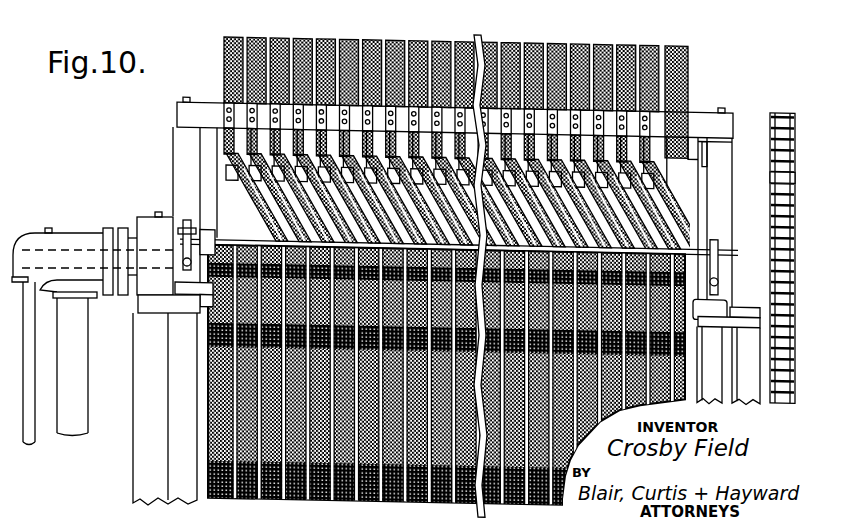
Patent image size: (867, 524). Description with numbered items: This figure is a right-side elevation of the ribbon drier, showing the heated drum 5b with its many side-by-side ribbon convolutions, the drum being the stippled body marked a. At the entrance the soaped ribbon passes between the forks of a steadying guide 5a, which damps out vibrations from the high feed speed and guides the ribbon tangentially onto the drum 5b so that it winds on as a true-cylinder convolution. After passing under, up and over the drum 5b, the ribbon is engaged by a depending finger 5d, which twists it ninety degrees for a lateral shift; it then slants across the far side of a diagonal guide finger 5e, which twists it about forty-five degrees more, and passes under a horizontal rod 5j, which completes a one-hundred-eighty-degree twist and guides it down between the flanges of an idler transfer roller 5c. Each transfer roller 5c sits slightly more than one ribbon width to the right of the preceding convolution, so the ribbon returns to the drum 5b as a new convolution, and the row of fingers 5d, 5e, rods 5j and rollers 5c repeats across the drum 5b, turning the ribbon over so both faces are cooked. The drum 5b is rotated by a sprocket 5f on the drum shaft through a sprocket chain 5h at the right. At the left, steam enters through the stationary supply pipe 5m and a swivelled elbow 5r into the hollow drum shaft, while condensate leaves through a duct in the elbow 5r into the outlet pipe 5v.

The drum 5b is at (224, 50).
The porous plate material a is at (318, 40).
The depending finger 5d is at (255, 172).
The diagonal guide finger 5e is at (250, 188).
The elbow 5r is at (30, 245).
The outlet pipe 5v is at (28, 444).
The supply pipe 5m is at (83, 440).
The steadying guide 5a is at (213, 320).
The idler transfer roller 5c is at (680, 296).
The horizontal rod 5j is at (676, 252).
The sprocket 5f is at (783, 113).
The sprocket chain 5h is at (770, 175).